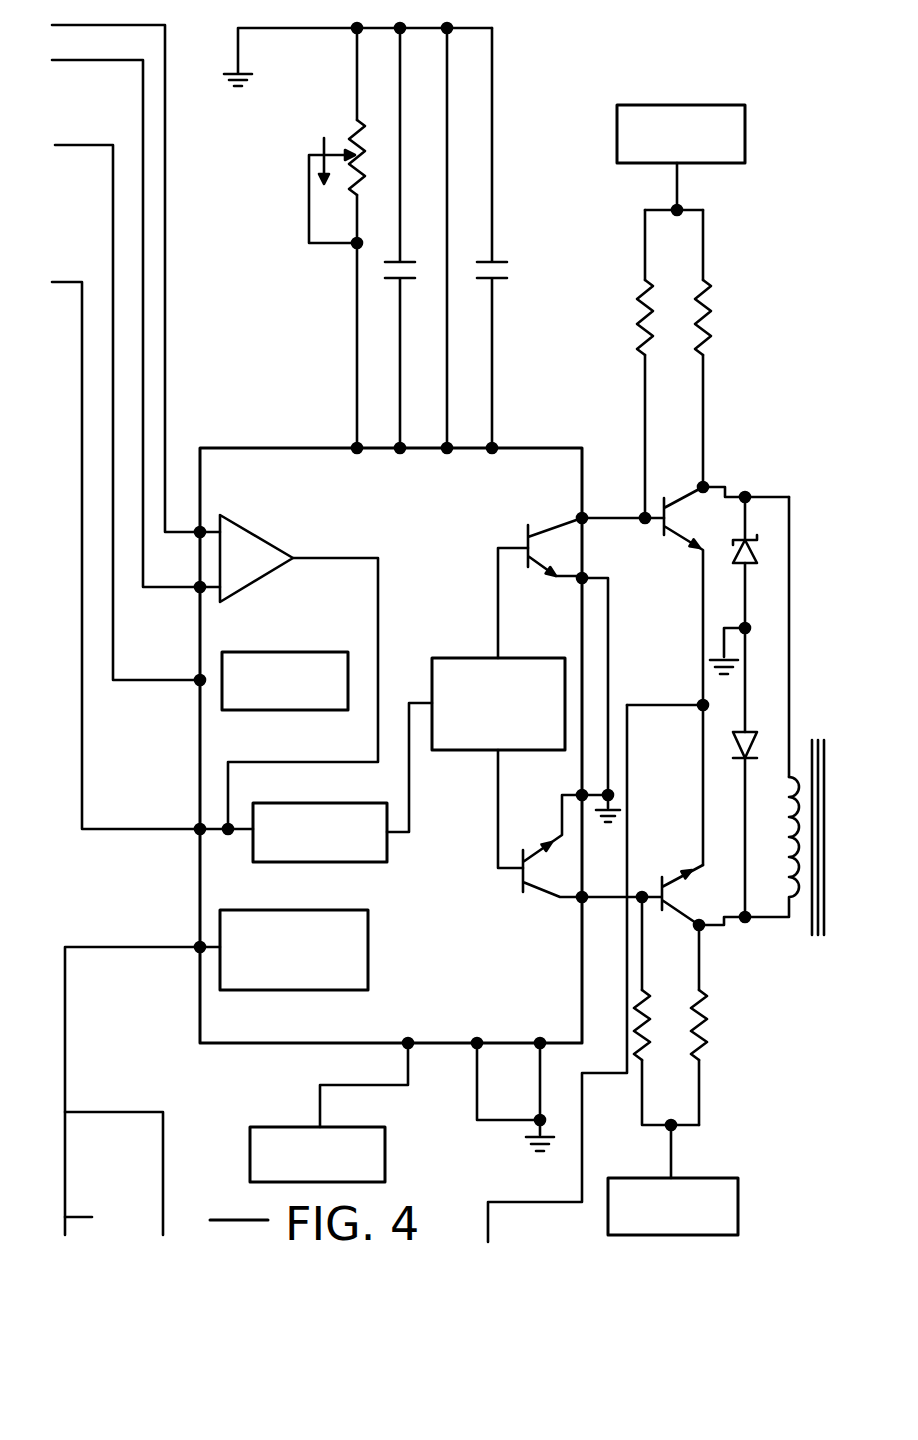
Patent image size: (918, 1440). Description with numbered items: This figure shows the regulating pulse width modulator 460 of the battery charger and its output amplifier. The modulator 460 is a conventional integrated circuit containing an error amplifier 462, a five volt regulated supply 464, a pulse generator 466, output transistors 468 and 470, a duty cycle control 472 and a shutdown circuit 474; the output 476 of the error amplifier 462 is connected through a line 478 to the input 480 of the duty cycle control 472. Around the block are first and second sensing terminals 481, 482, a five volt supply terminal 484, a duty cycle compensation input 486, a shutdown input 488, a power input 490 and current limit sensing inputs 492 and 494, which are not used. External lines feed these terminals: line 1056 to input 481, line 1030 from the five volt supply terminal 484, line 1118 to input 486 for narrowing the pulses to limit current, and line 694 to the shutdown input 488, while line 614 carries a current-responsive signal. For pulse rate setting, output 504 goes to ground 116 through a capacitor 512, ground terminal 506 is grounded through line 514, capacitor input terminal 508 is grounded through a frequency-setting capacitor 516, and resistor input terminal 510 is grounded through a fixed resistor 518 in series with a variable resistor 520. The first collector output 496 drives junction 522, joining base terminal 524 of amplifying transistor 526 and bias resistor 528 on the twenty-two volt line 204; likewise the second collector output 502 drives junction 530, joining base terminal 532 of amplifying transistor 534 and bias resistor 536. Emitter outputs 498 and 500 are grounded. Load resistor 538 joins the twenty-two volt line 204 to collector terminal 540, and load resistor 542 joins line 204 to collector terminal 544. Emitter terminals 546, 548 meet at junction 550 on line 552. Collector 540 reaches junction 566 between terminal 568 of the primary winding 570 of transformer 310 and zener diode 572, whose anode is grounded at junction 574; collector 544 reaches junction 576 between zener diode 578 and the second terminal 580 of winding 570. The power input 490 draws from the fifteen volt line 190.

The ground 116 is at (246, 73).
The line 190 is at (267, 1125).
The 22 volt line 204 is at (723, 165).
The transformer 310 is at (808, 714).
The regulating pulse width modulator 460 is at (406, 506).
The error amplifier 462 is at (260, 547).
The 5 volt regulated supply 464 is at (273, 651).
The pulse generator 466 is at (453, 658).
The output transistor 468 is at (538, 512).
The output transistor 470 is at (535, 901).
The duty cycle control 472 is at (375, 864).
The shutdown circuit 474 is at (368, 957).
The output 476 is at (295, 556).
The line 478 is at (380, 602).
The input 480 is at (238, 834).
The first sensing terminal 481 is at (183, 530).
The second sensing terminal 482 is at (172, 588).
The 5 volt supply terminal 484 is at (183, 660).
The duty cycle compensation input 486 is at (178, 832).
The shutdown input 488 is at (130, 948).
The power input 490 is at (408, 1063).
The current limit sensing input 492 is at (475, 1076).
The current limit sensing input 494 is at (540, 1094).
The first collector output 496 is at (600, 523).
The first emitter output 498 is at (595, 578).
The second emitter output 500 is at (592, 793).
The second collector output 502 is at (570, 893).
The output 504 is at (493, 451).
The ground terminal 506 is at (450, 451).
The capacitor input terminal 508 is at (401, 451).
The resistor input terminal 510 is at (357, 450).
The capacitor 512 is at (503, 266).
The line 514 is at (447, 202).
The frequency-setting capacitor 516 is at (403, 266).
The fixed resistor 518 is at (350, 342).
The variable resistor 520 is at (320, 256).
The junction 522 is at (643, 515).
The base terminal 524 is at (658, 492).
The amplifying transistor 526 is at (726, 464).
The bias resistor 528 is at (643, 313).
The junction 530 is at (642, 893).
The base terminal 532 is at (655, 912).
The amplifying transistor 534 is at (678, 893).
The bias resistor 536 is at (645, 1011).
The load resistor 538 is at (712, 300).
The collector terminal 540 is at (704, 484).
The load resistor 542 is at (707, 1012).
The collector terminal 544 is at (700, 928).
The emitter terminal 546 is at (700, 556).
The emitter terminal 548 is at (702, 868).
The junction 550 is at (699, 703).
The line 552 is at (630, 762).
The junction 566 is at (747, 493).
The terminal 568 is at (790, 603).
The primary winding 570 is at (788, 775).
The zener diode 572 is at (758, 548).
The junction 574 is at (748, 627).
The junction 576 is at (747, 912).
The zener diode 578 is at (752, 762).
The second terminal 580 is at (787, 916).
The line 614 is at (120, 1110).
The line 694 is at (90, 1217).
The line 1030 is at (90, 145).
The line 1056 is at (140, 26).
The line 1118 is at (90, 828).